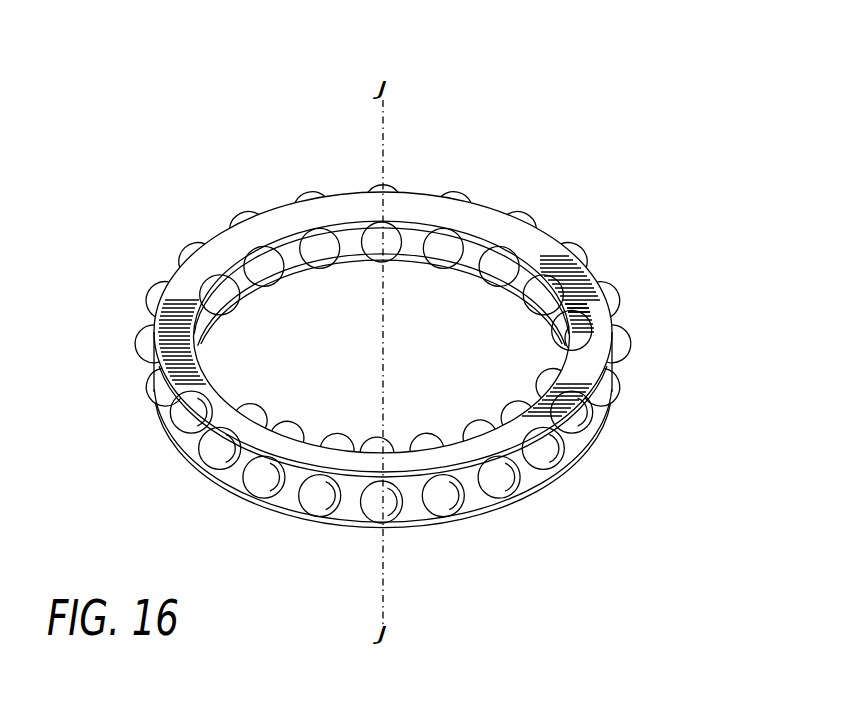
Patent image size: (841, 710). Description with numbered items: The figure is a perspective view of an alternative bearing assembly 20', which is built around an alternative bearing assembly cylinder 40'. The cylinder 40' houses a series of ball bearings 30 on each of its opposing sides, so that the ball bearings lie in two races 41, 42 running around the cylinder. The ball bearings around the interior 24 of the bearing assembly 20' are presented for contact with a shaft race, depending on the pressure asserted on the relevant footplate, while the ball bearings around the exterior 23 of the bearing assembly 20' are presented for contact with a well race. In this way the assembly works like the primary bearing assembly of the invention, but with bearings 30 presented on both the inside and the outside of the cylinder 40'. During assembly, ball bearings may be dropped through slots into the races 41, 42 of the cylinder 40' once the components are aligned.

The alternative exemplary bearing assembly 20' is at (318, 377).
The exterior 23 is at (153, 336).
The interior 24 is at (197, 284).
The ball bearings 30 is at (620, 363).
The alternative exemplary bearing assembly cylinder 40' is at (383, 320).
The race 41 is at (296, 494).
The race 42 is at (296, 241).